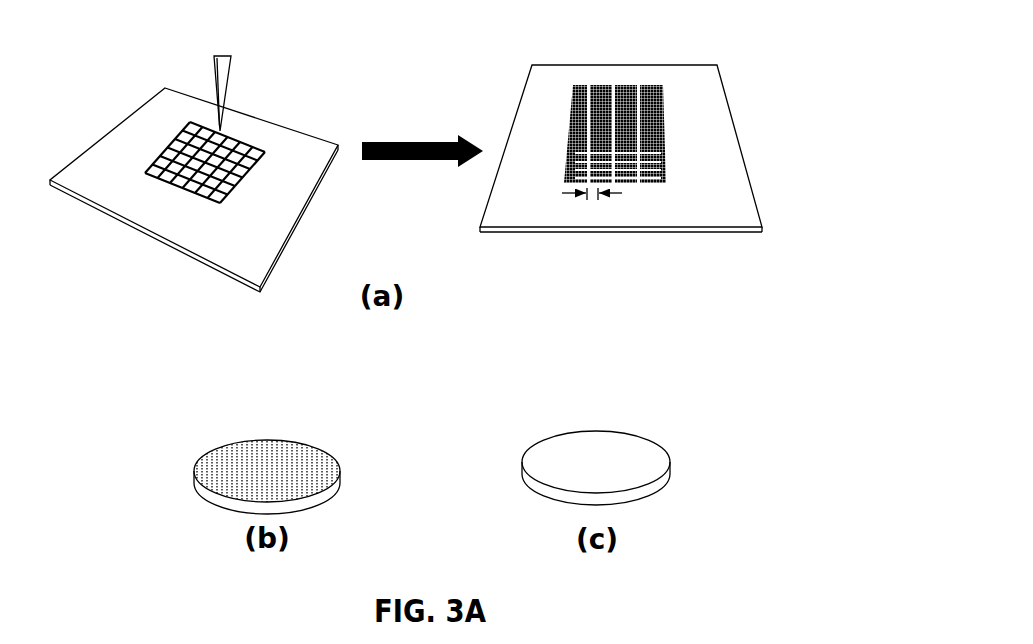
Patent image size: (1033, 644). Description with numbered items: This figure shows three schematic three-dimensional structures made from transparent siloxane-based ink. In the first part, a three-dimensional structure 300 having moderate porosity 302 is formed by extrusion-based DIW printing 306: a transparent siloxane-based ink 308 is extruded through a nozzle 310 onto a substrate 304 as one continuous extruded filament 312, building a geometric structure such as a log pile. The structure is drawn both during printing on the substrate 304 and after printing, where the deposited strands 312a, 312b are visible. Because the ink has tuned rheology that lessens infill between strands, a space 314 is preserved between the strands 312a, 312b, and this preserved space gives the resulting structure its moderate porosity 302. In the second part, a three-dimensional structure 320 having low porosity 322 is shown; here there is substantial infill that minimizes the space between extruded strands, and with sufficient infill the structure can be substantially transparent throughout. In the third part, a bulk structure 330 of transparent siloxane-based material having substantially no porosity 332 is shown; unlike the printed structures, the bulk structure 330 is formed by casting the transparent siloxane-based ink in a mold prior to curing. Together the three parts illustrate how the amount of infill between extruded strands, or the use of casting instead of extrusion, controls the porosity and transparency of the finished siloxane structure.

The 3D structure 300 is at (585, 55).
The moderate porosity 302 is at (434, 141).
The substrate 304 is at (77, 191).
The extrusion-based DIW printing 306 is at (400, 153).
The transparent siloxane-based ink 308 is at (219, 72).
The nozzle 310 is at (229, 78).
The continuous extruded filament 312 is at (200, 122).
The strand 312a is at (586, 128).
The strand 312b is at (599, 138).
The space 314 is at (592, 201).
The 3D structure 320 is at (220, 453).
The low porosity 322 is at (287, 442).
The bulk structure 330 is at (571, 447).
The substantially no porosity 332 is at (649, 438).